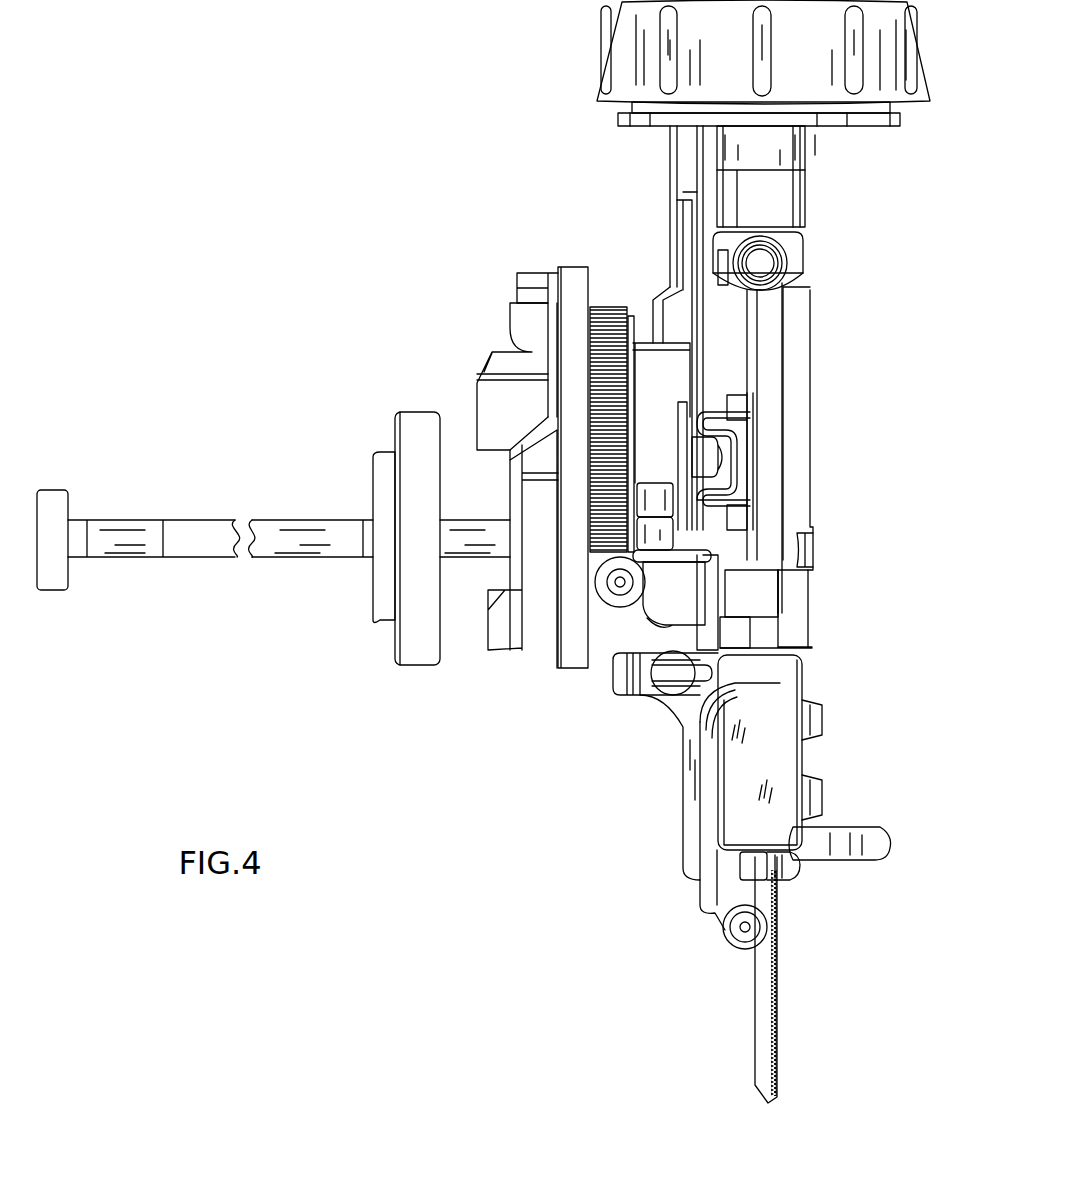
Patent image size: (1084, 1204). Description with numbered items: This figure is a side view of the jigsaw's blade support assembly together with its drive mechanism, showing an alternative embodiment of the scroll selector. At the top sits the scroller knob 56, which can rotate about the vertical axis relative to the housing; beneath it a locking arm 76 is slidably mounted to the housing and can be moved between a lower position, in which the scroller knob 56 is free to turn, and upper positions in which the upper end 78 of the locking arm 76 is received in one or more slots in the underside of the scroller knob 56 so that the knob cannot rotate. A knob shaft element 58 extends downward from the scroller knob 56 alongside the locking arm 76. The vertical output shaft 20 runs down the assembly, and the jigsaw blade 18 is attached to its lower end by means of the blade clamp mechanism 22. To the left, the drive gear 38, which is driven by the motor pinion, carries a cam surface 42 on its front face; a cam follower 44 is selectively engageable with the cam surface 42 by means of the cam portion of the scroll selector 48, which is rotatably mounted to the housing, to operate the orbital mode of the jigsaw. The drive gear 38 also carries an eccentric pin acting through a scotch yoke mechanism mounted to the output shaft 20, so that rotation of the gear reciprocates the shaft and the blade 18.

The scroller knob 56 is at (603, 72).
The knob shaft housing 58 is at (800, 162).
The upper end of locking arm 78 is at (672, 160).
The locking arm 76 is at (680, 297).
The drive gear 38 is at (603, 350).
The output shaft 20 is at (755, 349).
The cam surface 42 is at (633, 375).
The cam follower 44 is at (663, 500).
The scroll selector 48 is at (620, 590).
The blade clamp mechanism 22 is at (865, 850).
The jigsaw blade 18 is at (765, 1000).